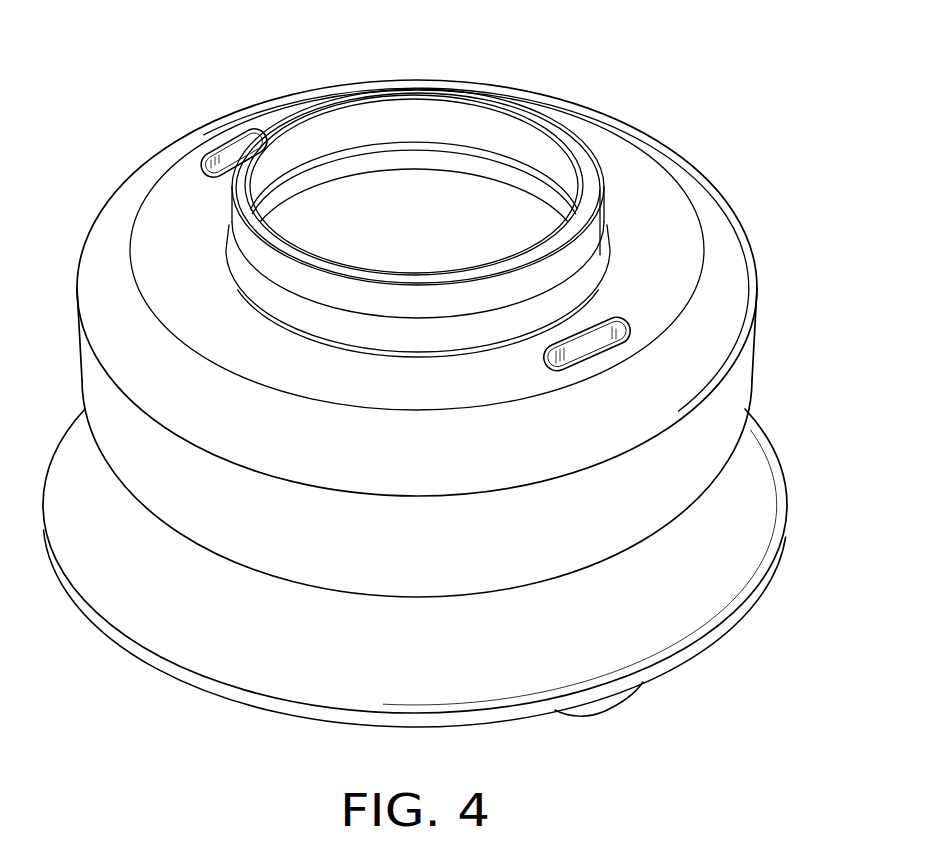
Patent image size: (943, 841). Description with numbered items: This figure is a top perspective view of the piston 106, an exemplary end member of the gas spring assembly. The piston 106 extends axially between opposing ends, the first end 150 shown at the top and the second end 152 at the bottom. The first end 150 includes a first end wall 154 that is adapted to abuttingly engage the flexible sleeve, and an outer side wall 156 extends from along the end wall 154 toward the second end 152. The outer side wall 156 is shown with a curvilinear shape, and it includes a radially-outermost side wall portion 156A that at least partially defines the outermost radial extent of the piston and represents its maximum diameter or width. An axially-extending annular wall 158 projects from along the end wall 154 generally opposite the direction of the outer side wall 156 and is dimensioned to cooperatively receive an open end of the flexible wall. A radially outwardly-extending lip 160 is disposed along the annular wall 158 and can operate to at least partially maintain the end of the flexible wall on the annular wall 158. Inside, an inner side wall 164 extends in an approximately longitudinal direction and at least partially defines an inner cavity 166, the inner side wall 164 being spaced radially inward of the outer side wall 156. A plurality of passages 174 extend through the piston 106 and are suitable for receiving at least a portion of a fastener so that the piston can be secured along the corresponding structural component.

The piston 106 is at (704, 106).
The first end 150 is at (236, 84).
The second end 152 is at (145, 688).
The first end wall 154 is at (607, 147).
The outer side wall 156 is at (748, 373).
The radially-outermost side wall portion 156A is at (700, 643).
The annular wall 158 is at (400, 110).
The lip 160 is at (600, 190).
The inner side wall 164 is at (470, 213).
The inner cavity 166 is at (368, 190).
The passages 174 is at (210, 146).